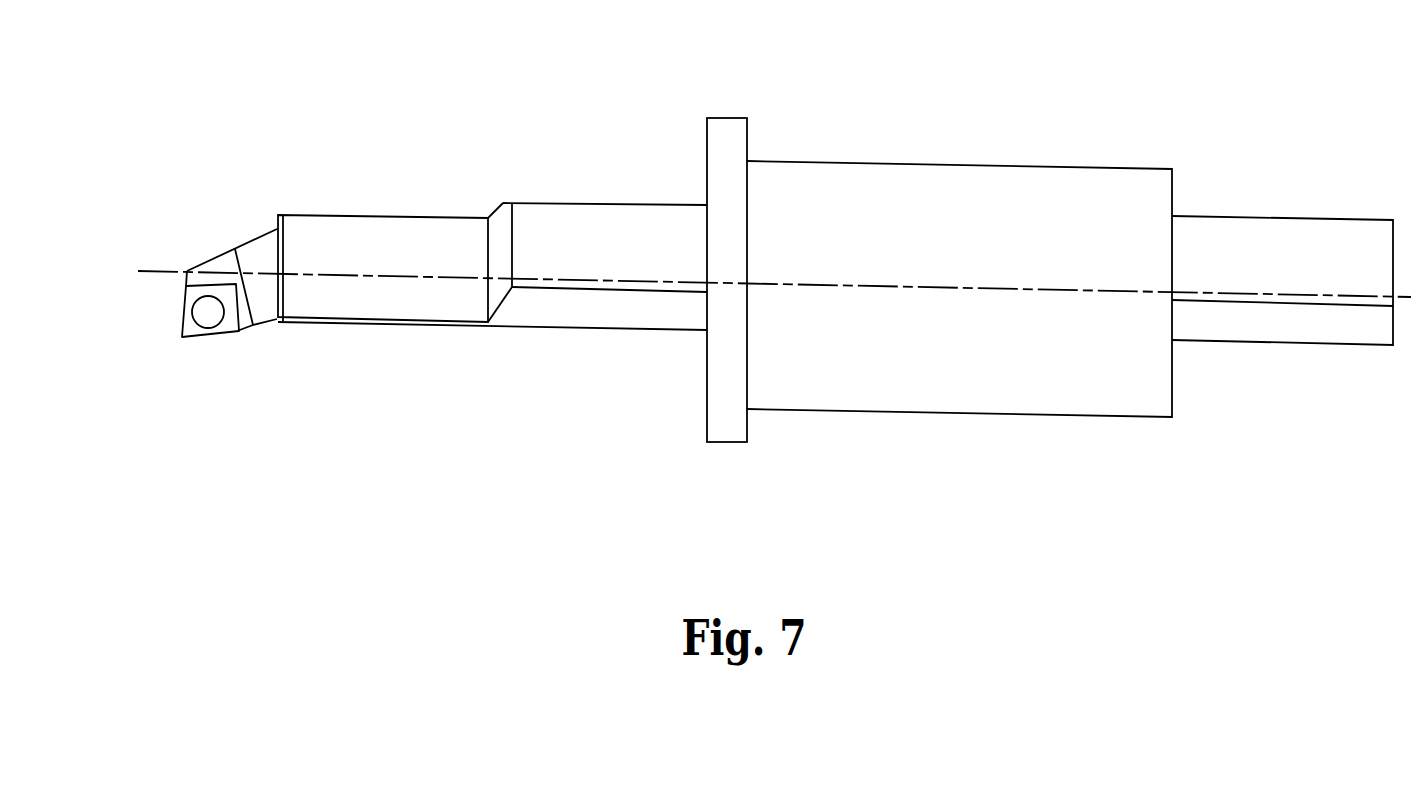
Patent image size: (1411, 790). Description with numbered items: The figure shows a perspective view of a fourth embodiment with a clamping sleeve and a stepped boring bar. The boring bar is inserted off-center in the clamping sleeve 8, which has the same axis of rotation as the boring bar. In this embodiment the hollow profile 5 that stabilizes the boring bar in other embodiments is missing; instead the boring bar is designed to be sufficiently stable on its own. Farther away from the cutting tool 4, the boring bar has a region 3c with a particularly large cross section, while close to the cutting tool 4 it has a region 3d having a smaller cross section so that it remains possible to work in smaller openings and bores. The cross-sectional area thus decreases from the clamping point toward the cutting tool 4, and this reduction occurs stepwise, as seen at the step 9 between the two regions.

The region with a particularly large cross section 3c is at (632, 242).
The region having a smaller cross section 3d is at (512, 287).
The cutting tool 4 is at (188, 334).
The hollow profile 5 is at (145, 271).
The clamping sleeve 8 is at (1059, 333).
The step 9 is at (502, 250).